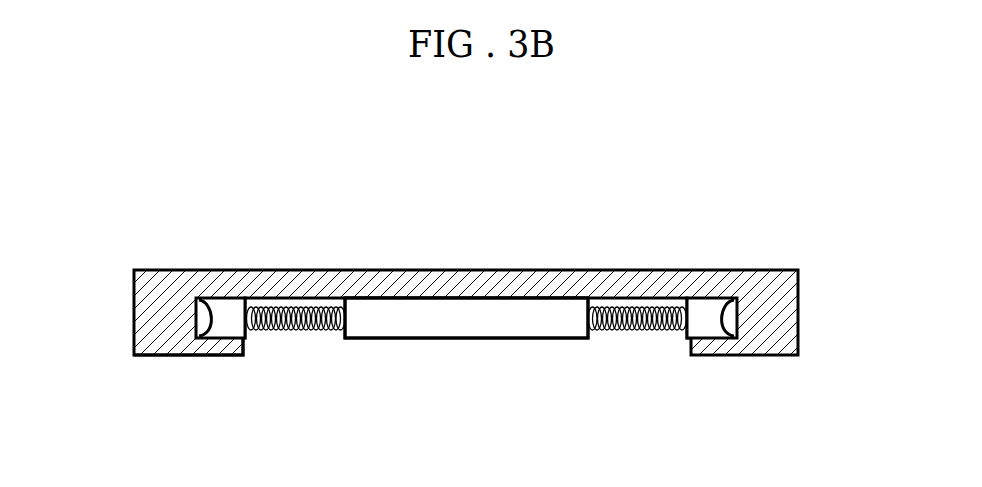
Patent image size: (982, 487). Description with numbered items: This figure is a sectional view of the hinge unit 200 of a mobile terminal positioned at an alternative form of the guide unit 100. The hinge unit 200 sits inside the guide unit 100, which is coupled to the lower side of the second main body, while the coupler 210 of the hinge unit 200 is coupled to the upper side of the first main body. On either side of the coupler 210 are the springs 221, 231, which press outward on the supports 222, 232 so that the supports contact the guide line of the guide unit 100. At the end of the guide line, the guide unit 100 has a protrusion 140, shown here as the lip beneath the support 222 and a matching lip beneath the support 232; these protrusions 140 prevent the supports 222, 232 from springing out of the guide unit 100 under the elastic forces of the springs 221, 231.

The guide unit 100 is at (677, 254).
The protrusion 140 is at (230, 355).
The hinge unit 200 is at (406, 356).
The coupler 210 is at (487, 328).
The spring 221 is at (296, 329).
The support 222 is at (213, 320).
The spring 231 is at (631, 328).
The support 232 is at (723, 320).